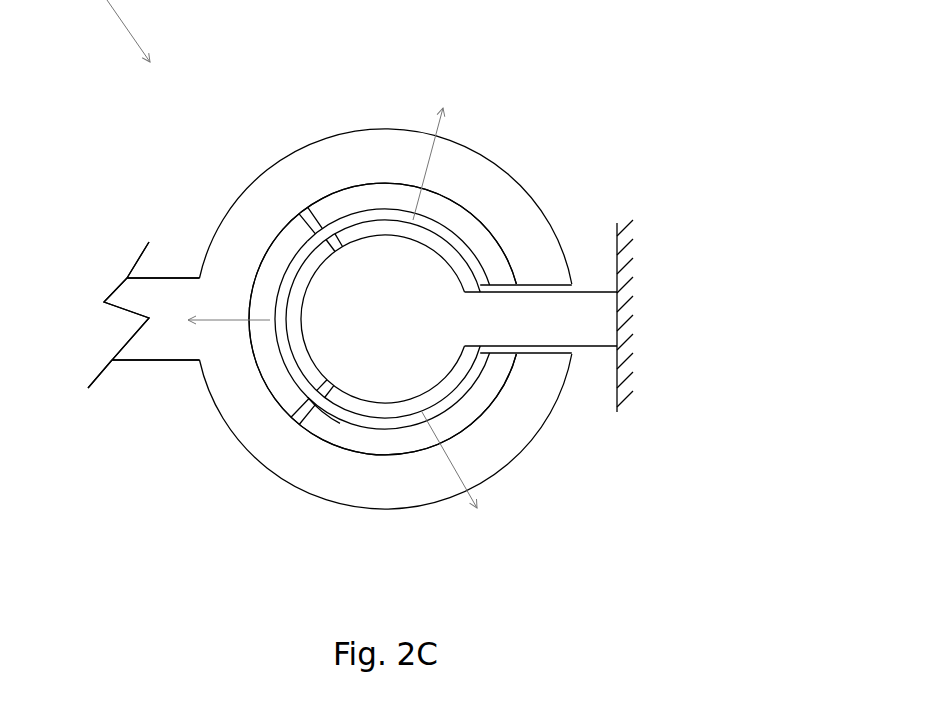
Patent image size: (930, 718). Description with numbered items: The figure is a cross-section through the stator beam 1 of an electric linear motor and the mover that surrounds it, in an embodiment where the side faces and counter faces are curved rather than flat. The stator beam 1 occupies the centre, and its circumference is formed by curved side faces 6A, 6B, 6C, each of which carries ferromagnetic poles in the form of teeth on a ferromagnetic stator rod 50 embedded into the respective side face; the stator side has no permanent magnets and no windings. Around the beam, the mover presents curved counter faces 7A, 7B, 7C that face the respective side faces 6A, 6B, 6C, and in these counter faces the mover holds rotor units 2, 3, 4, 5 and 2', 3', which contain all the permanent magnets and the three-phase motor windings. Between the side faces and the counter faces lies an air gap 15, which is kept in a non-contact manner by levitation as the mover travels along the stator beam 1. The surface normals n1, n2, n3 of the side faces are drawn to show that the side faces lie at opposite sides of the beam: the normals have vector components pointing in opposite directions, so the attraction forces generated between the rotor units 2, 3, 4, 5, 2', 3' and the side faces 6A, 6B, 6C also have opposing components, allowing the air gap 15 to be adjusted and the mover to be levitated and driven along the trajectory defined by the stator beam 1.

The stator beam 1 is at (384, 333).
The rotor unit 2 is at (383, 190).
The rotor unit 3 is at (382, 251).
The rotor unit 2' is at (420, 435).
The rotor unit 3' is at (382, 387).
The rotor unit 4 is at (273, 267).
The rotor unit 5 is at (144, 315).
The side face 6A is at (397, 220).
The side face 6B is at (305, 243).
The side face 6C is at (405, 418).
The counter-face 7A is at (463, 242).
The counter-face 7B is at (275, 350).
The counter-face 7C is at (468, 397).
The air gap 15 is at (327, 407).
The ferromagnetic stator rod 50 is at (363, 230).
The surface normal n1 is at (434, 156).
The surface normal n2 is at (229, 311).
The surface normal n3 is at (458, 467).